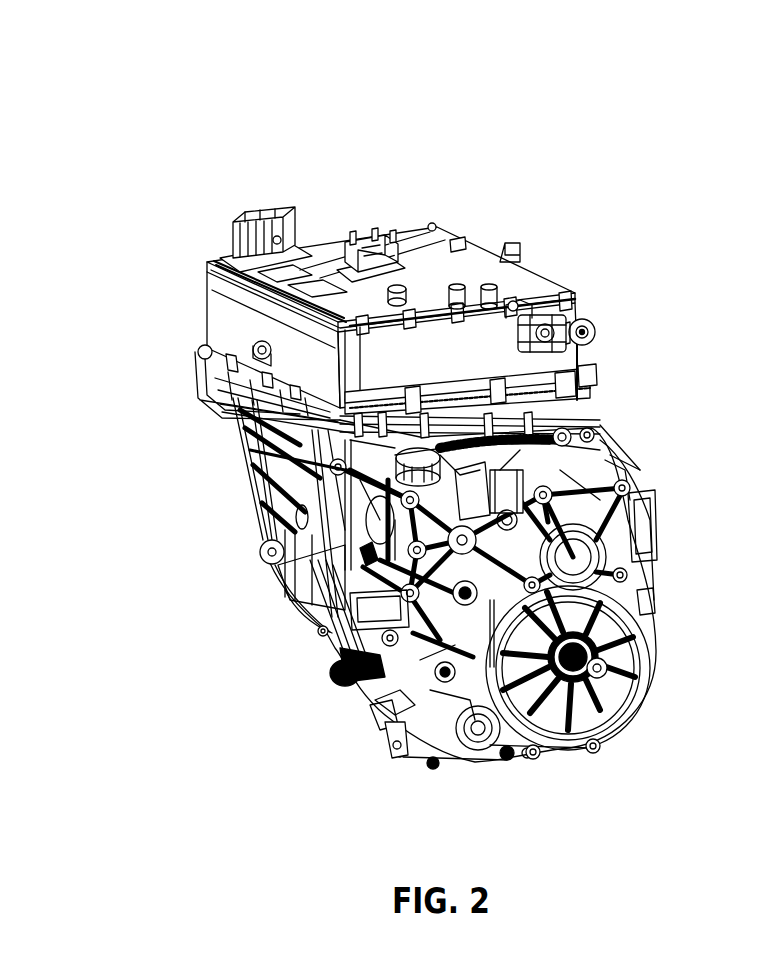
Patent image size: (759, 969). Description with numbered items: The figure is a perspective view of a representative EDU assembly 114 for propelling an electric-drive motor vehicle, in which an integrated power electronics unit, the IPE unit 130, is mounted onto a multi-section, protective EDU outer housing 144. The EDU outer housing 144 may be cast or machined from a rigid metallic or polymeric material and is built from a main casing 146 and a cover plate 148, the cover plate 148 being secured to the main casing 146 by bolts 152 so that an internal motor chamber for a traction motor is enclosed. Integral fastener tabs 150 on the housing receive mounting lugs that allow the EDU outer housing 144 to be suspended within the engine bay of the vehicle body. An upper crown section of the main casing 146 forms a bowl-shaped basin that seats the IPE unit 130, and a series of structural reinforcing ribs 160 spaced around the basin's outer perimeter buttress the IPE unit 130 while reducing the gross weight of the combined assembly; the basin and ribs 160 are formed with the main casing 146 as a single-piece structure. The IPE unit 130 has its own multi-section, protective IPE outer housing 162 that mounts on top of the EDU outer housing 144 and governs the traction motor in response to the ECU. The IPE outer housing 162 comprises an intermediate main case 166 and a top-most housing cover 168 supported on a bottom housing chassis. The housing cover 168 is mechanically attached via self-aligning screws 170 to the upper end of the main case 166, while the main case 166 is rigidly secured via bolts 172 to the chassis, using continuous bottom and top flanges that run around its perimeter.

The EDU assembly 114 is at (260, 116).
The IPE unit 130 is at (465, 193).
The EDU outer housing 144 is at (313, 651).
The main casing 146 is at (283, 570).
The cover plate 148 is at (385, 722).
The fastener tabs 150 is at (262, 545).
The bolts 152 is at (598, 433).
The structural reinforcing ribs 160 is at (255, 435).
The IPE outer housing 162 is at (212, 236).
The main case 166 is at (200, 320).
The housing cover 168 is at (205, 258).
The self-aligning screws 170 is at (513, 310).
The bolts 172 is at (500, 388).